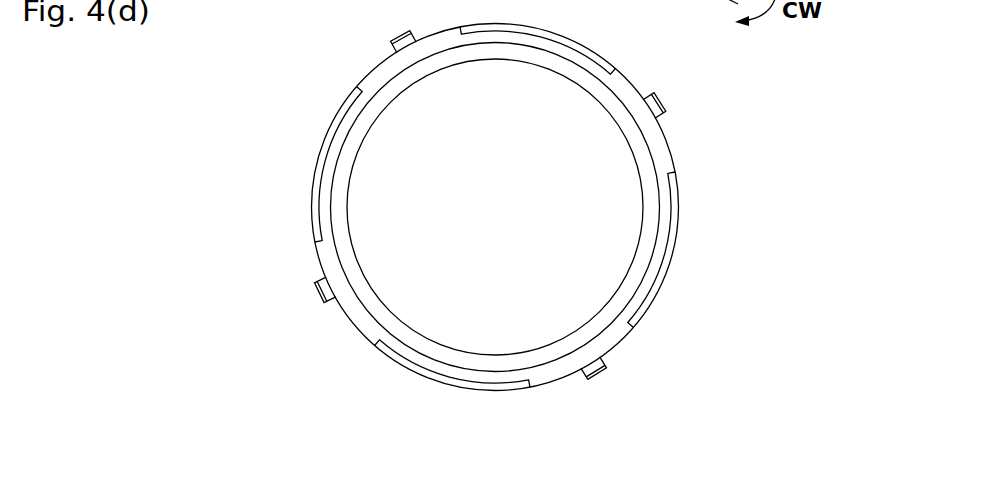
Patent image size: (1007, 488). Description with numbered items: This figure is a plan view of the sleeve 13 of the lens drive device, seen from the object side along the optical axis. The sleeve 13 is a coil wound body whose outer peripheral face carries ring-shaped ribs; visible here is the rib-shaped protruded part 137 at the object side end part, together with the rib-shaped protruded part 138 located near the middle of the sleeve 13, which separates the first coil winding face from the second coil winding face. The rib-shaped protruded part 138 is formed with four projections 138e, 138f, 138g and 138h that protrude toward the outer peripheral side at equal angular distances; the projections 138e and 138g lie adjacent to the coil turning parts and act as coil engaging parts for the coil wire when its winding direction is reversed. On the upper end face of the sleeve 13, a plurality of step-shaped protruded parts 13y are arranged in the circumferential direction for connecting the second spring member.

The sleeve 13 is at (366, 65).
The step-shaped protruded parts 13y is at (529, 34).
The rib-shaped protruded part 137 is at (597, 353).
The rib-shaped protruded part 138 is at (667, 146).
The projection 138e is at (596, 383).
The projection 138f is at (665, 115).
The projection 138g is at (392, 42).
The projection 138h is at (318, 299).